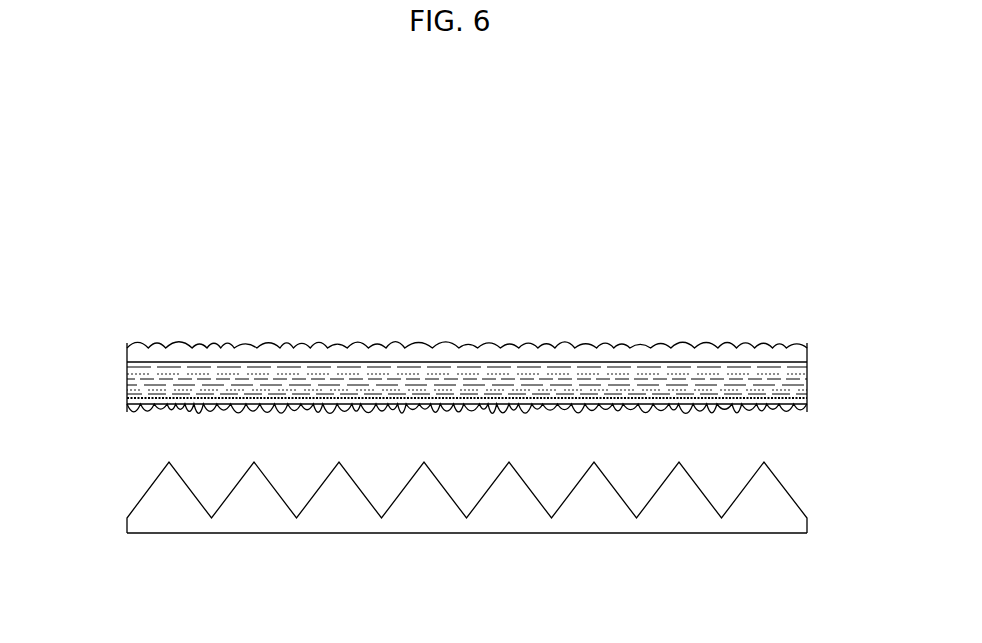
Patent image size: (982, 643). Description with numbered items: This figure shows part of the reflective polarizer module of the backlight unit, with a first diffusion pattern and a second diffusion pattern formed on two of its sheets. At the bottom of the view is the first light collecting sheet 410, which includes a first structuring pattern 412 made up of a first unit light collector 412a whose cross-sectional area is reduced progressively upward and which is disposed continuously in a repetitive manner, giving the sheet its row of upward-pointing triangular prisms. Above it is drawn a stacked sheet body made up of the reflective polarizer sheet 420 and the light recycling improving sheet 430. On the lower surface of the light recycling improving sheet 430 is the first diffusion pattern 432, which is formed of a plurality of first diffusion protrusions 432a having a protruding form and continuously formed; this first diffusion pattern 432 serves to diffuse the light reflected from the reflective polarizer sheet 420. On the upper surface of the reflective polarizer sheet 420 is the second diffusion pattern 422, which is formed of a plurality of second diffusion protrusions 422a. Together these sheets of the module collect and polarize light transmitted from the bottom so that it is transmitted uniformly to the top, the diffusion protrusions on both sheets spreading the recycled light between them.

The first light collecting sheet 410 is at (762, 547).
The first structuring pattern 412 is at (775, 499).
The first unit light collector 412a is at (175, 492).
The reflective polarizer sheet 420 is at (790, 380).
The second diffusion pattern 422 is at (254, 264).
The second diffusion protrusion 422a is at (187, 345).
The light recycling improving sheet 430 is at (793, 399).
The first diffusion pattern 432 is at (63, 420).
The first diffusion protrusion 432a is at (177, 413).